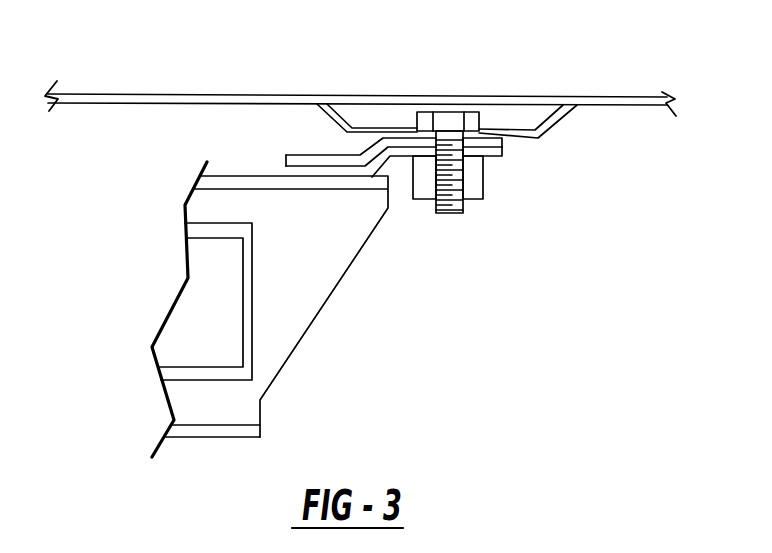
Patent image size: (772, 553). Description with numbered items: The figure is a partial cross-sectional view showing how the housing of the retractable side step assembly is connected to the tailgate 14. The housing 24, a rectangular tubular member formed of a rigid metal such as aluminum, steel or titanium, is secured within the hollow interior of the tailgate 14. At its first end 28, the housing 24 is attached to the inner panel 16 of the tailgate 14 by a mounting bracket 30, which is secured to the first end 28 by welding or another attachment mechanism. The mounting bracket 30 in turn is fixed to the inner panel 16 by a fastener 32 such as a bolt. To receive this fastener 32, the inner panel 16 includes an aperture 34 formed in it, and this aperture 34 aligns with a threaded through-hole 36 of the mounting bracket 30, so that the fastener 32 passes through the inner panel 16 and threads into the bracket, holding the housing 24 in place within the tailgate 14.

The tailgate 14 is at (389, 69).
The inner panel 16 is at (147, 93).
The housing 24 is at (208, 438).
The first end 28 is at (360, 250).
The mounting bracket 30 is at (502, 152).
The fastener 32 is at (423, 115).
The aperture 34 is at (413, 132).
The threaded through-hole 36 is at (483, 177).